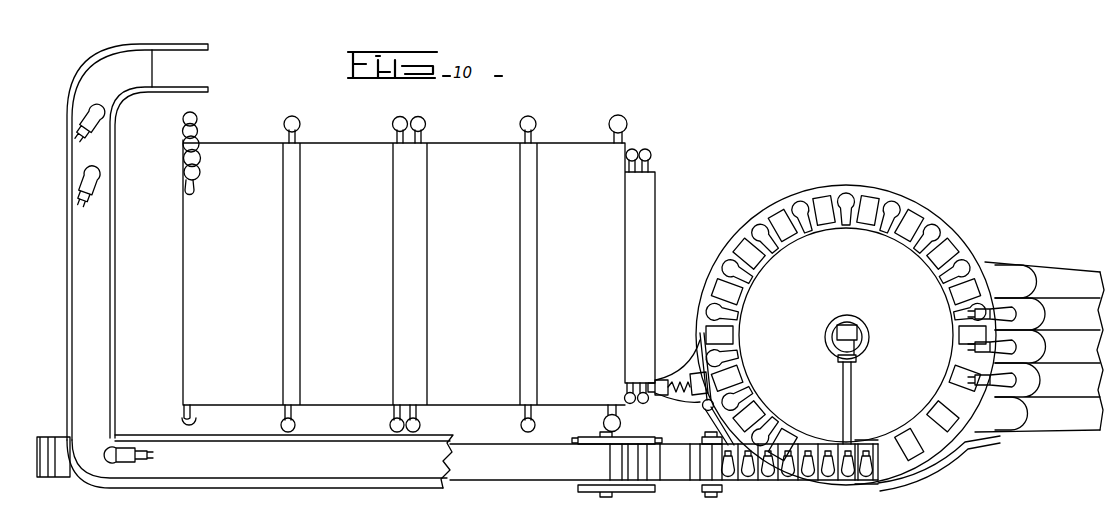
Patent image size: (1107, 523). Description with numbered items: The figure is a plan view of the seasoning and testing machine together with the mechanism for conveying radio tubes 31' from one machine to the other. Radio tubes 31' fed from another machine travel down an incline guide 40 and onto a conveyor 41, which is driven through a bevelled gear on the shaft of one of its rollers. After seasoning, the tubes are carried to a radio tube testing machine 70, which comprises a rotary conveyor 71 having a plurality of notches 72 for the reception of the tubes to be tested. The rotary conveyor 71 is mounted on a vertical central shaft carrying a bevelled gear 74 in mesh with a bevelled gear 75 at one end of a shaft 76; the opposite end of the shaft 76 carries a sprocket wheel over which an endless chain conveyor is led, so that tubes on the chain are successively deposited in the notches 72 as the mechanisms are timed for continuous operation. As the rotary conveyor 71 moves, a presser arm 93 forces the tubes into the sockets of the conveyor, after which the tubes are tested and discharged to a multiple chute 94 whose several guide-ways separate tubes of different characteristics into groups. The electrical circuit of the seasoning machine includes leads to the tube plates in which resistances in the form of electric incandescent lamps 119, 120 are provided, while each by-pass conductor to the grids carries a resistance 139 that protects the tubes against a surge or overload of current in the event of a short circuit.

The radio tube 31' is at (525, 285).
The incline guide 40 is at (68, 213).
The conveyor 41 is at (70, 478).
The radio tube testing machine 70 is at (853, 176).
The rotary conveyor 71 is at (905, 245).
The notches 72 is at (718, 300).
The bevelled gear 74 is at (866, 330).
The bevelled gear 75 is at (860, 351).
The shaft 76 is at (853, 394).
The presser arm 93 is at (700, 336).
The multiple chute 94 is at (1000, 285).
The electric incandescent lamp 119 is at (636, 146).
The electric incandescent lamp 120 is at (650, 152).
The resistance 139 is at (285, 118).